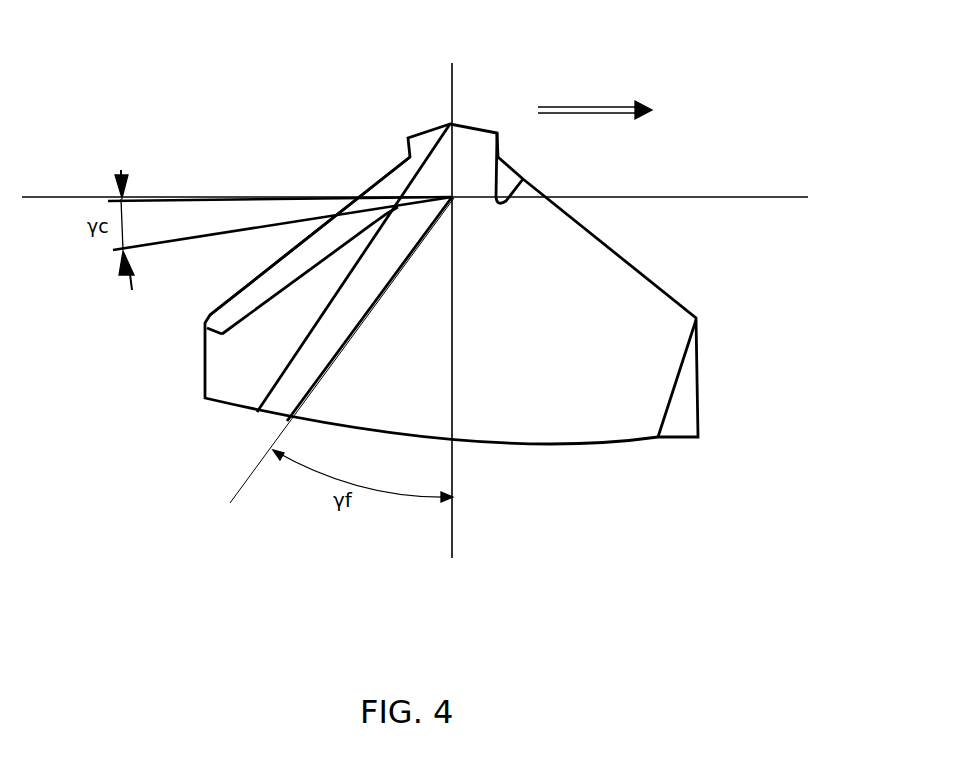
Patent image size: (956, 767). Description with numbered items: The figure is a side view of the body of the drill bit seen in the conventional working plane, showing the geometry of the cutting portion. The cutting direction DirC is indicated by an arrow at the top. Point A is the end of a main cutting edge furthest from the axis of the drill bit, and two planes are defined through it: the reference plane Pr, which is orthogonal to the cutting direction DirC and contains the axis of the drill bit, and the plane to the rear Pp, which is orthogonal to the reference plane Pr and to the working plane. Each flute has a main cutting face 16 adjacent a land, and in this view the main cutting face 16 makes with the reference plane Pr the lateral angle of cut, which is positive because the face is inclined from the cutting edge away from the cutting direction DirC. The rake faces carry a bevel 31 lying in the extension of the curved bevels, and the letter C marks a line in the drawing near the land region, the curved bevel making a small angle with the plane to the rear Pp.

The main cutting face 16 is at (375, 372).
The bevel 31 is at (227, 312).
The end of main cutting edge A is at (458, 203).
The cutting edge C is at (376, 224).
The reference plane Pr is at (458, 297).
The plane to the rear Pp is at (418, 215).
The cutting direction DirC is at (607, 96).